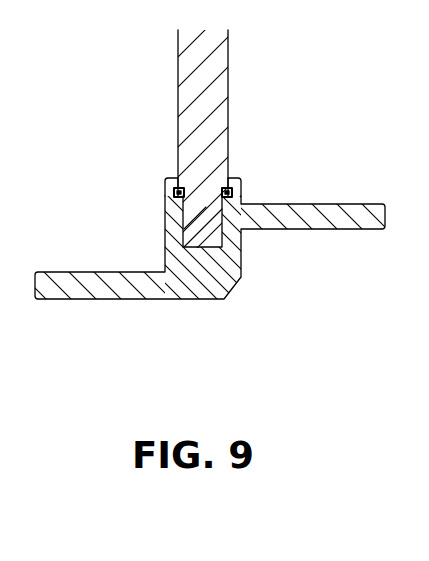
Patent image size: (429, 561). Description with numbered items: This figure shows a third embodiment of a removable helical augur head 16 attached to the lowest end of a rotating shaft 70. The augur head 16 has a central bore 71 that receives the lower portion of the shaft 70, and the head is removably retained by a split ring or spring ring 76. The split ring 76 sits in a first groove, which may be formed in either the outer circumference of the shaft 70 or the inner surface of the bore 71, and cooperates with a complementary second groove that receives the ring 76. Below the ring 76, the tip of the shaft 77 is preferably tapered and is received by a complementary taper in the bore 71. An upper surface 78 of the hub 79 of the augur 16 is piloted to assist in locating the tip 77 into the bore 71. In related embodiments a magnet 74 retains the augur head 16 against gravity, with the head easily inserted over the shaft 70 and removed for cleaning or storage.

The augur head 16 is at (353, 213).
The rotating shaft 70 is at (200, 128).
The central bore 71 is at (217, 226).
The magnet 74 is at (192, 272).
The split ring 76 is at (225, 188).
The tip of the shaft 77 is at (198, 218).
The upper surface 78 is at (172, 178).
The hub 79 is at (239, 190).